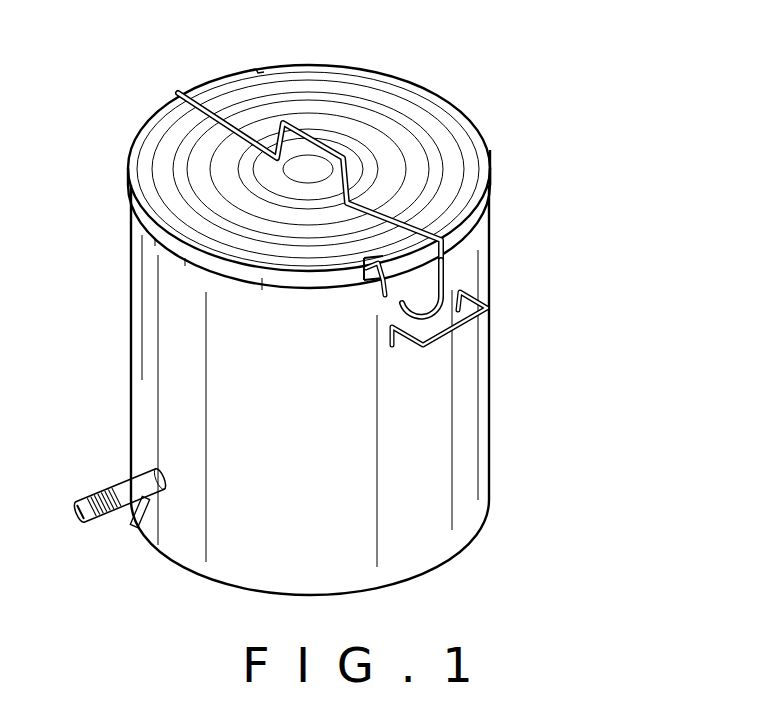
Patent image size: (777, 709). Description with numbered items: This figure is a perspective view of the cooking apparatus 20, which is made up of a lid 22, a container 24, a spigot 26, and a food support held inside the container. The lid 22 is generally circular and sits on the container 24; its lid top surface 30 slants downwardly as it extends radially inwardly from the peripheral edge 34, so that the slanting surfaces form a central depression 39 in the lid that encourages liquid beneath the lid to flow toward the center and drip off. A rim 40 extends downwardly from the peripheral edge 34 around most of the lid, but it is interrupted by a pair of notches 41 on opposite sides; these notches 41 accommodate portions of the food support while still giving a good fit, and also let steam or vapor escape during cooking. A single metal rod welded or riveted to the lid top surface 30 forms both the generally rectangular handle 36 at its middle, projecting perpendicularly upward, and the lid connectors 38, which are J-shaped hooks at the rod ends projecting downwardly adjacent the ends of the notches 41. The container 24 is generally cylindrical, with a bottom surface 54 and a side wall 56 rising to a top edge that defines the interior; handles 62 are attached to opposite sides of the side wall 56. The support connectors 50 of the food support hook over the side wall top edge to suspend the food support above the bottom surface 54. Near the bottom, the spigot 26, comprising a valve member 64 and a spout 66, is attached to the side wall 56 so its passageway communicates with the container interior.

The cooking apparatus 20 is at (547, 88).
The lid 22 is at (414, 102).
The container 24 is at (473, 445).
The spigot 26 is at (122, 482).
The lid top surface 30 is at (462, 147).
The peripheral edge 34 is at (491, 165).
The handle 36 is at (303, 133).
The lid connectors 38 is at (418, 300).
The central depression 39 is at (300, 176).
The rim 40 is at (174, 254).
The notches 41 is at (396, 258).
The support connectors 50 is at (372, 288).
The bottom surface 54 is at (455, 553).
The side wall 56 is at (470, 378).
The handles 62 is at (484, 330).
The valve member 64 is at (98, 512).
The spout 66 is at (133, 523).